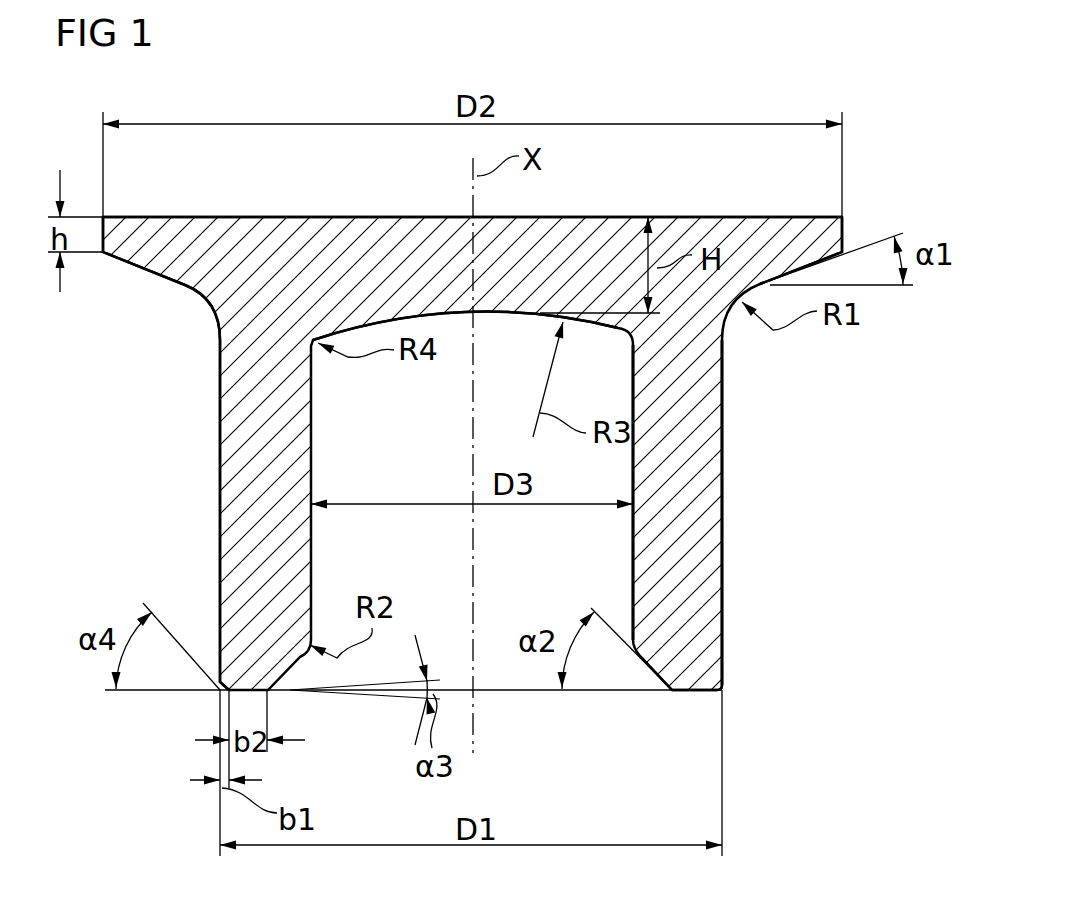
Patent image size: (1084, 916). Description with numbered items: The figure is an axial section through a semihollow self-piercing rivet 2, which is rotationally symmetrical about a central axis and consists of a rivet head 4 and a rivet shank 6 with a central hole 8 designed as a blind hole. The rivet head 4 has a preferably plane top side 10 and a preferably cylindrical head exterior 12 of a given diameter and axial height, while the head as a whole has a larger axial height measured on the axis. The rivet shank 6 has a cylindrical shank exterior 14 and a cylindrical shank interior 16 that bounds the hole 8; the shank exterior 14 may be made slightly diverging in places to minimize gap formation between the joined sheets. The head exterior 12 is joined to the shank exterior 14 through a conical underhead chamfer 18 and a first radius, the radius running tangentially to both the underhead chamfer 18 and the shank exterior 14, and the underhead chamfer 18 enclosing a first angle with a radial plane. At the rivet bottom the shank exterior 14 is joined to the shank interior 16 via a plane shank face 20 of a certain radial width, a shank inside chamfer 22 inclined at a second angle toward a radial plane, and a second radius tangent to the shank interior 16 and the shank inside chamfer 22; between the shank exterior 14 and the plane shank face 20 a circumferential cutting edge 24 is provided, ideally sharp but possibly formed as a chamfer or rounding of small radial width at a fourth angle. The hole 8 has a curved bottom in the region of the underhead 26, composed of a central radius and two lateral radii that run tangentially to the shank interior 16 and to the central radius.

The self-piercing rivet 2 is at (542, 450).
The rivet head 4 is at (172, 321).
The rivet shank 6 is at (187, 515).
The central hole 8 is at (620, 467).
The top side 10 is at (298, 217).
The head exterior 12 is at (843, 242).
The shank exterior 14 is at (724, 575).
The shank interior 16 is at (633, 556).
The underhead chamfer 18 is at (128, 270).
The plane shank face 20 is at (697, 694).
The shank inside chamfer 22 is at (653, 681).
The cutting edge 24 is at (723, 692).
The underhead 26 is at (483, 315).